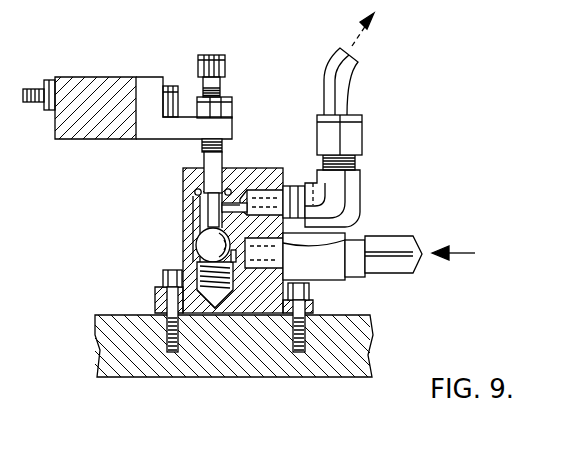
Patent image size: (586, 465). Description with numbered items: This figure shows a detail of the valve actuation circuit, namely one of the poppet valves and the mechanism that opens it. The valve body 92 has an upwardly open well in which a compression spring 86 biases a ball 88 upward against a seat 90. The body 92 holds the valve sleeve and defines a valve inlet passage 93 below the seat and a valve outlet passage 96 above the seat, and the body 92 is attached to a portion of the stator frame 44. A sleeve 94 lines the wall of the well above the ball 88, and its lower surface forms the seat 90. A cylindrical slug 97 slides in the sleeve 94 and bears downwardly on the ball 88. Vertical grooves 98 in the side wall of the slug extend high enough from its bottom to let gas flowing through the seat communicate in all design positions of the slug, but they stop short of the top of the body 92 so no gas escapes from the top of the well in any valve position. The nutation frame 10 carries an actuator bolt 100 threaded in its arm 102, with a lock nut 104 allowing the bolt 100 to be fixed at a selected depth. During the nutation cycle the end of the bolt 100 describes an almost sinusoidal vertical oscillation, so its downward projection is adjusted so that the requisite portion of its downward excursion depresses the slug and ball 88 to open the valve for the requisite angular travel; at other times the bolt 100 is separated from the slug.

The frame 10 is at (84, 92).
The arm 102 is at (183, 123).
The lock nut 104 is at (228, 103).
The actuator bolt 100 is at (231, 152).
The cylindrical slug 97 is at (224, 147).
The valve body 92 is at (185, 188).
The valve outlet passage 96 is at (226, 208).
The sleeve 94 is at (197, 224).
The seat 90 is at (212, 245).
The ball 88 is at (198, 254).
The compression spring 86 is at (240, 275).
The valve inlet passage 93 is at (236, 258).
The vertical grooves 98 is at (360, 232).
The stator frame 44 is at (284, 370).